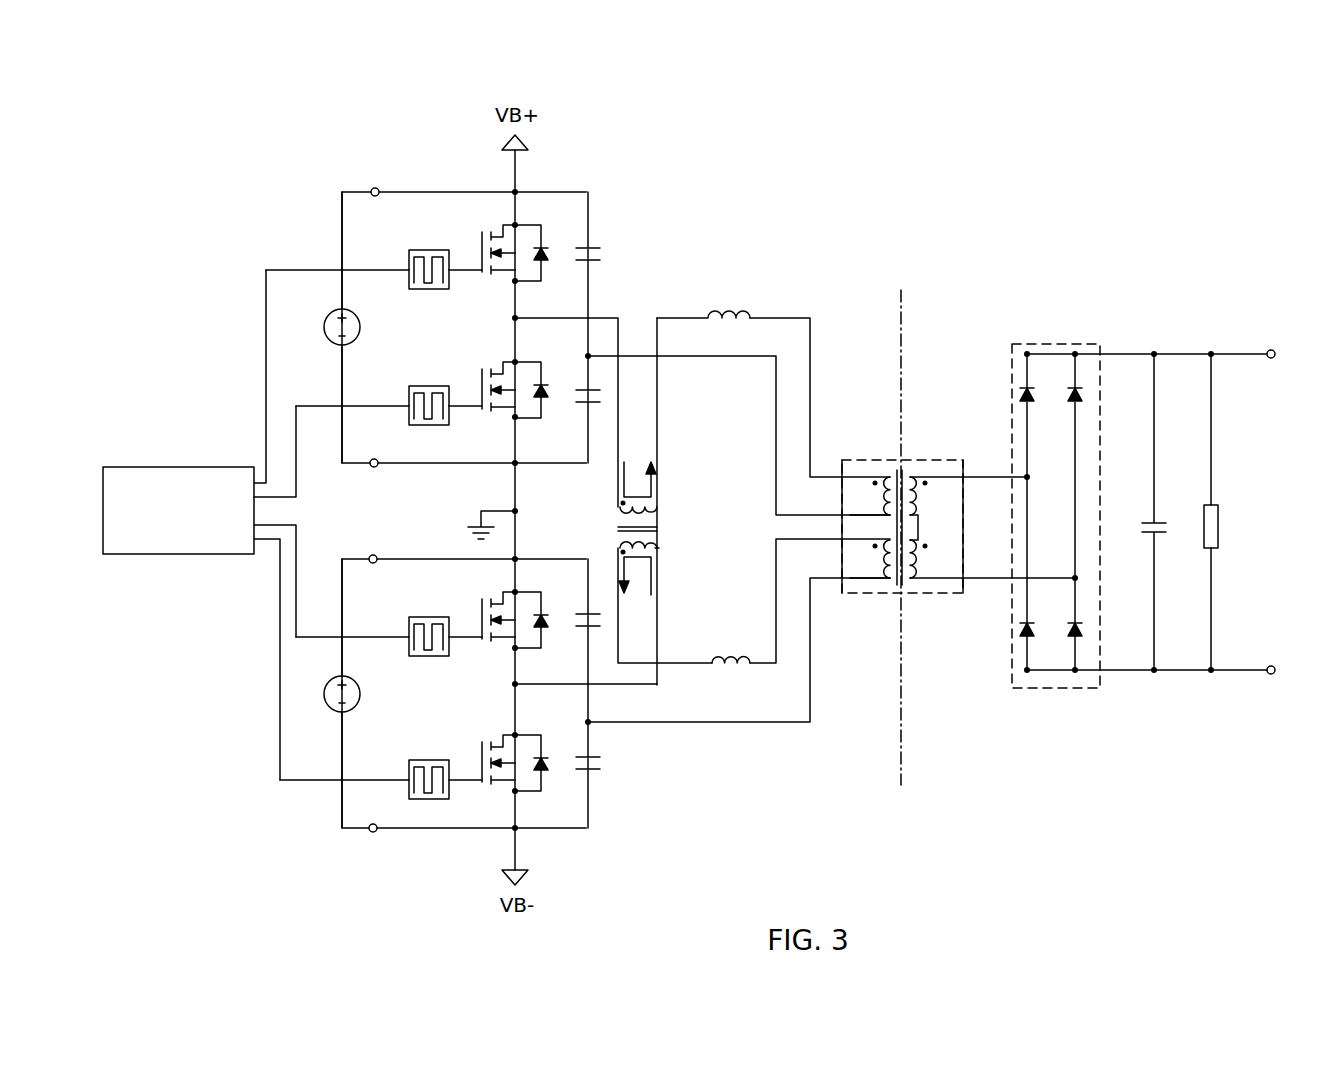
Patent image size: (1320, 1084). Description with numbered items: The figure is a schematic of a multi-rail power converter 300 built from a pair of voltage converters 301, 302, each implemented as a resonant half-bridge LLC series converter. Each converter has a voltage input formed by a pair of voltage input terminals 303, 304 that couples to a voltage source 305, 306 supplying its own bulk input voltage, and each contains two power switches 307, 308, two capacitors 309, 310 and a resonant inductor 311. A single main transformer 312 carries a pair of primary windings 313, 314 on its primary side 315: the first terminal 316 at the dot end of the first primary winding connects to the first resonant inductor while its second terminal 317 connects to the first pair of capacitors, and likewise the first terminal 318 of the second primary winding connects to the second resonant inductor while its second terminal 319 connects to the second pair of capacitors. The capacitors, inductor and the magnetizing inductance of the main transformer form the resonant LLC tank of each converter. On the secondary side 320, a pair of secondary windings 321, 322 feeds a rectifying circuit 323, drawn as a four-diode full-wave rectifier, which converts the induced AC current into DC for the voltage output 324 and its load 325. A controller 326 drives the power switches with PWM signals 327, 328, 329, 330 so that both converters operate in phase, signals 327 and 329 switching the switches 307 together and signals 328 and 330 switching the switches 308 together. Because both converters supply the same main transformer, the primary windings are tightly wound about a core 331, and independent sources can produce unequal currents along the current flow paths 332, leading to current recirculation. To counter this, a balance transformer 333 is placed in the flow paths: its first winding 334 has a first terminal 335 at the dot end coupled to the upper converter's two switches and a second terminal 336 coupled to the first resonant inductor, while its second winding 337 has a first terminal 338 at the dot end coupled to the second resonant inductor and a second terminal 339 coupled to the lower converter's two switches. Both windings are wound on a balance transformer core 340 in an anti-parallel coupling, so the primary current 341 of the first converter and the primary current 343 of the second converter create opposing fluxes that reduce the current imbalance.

The multi-rail power converter 300 is at (269, 81).
The voltage converter 301 is at (214, 313).
The voltage converter 302 is at (214, 696).
The voltage input terminal 303 is at (375, 187).
The voltage input terminal 304 is at (374, 468).
The voltage source 305 is at (345, 309).
The voltage source 306 is at (345, 676).
The power switch 307 is at (503, 228).
The power switch 308 is at (503, 365).
The capacitor 309 is at (598, 248).
The capacitor 310 is at (580, 405).
The resonant inductor 311 is at (730, 305).
The main transformer 312 is at (965, 466).
The primary winding 313 is at (893, 478).
The primary winding 314 is at (893, 580).
The primary side 315 is at (876, 727).
The first terminal 316 is at (880, 478).
The second terminal 317 is at (850, 506).
The first terminal 318 is at (860, 540).
The second terminal 319 is at (877, 580).
The secondary side 320 is at (956, 727).
The secondary winding 321 is at (918, 478).
The secondary winding 322 is at (916, 580).
The rectifying circuit 323 is at (1040, 344).
The voltage output 324 is at (1271, 348).
The load 325 is at (1220, 520).
The controller 326 is at (178, 467).
The PWM signal 327 is at (428, 250).
The PWM signal 328 is at (428, 386).
The PWM signal 329 is at (428, 617).
The PWM signal 330 is at (428, 760).
The core 331 is at (904, 585).
The current flow path 332 is at (812, 348).
The balance transformer 333 is at (706, 512).
The first winding 334 is at (658, 512).
The first terminal 335 is at (618, 511).
The second terminal 336 is at (658, 514).
The second winding 337 is at (658, 540).
The first terminal 338 is at (618, 546).
The second terminal 339 is at (658, 548).
The balance transformer core 340 is at (618, 530).
The primary current 341 is at (657, 473).
The primary current 343 is at (655, 588).